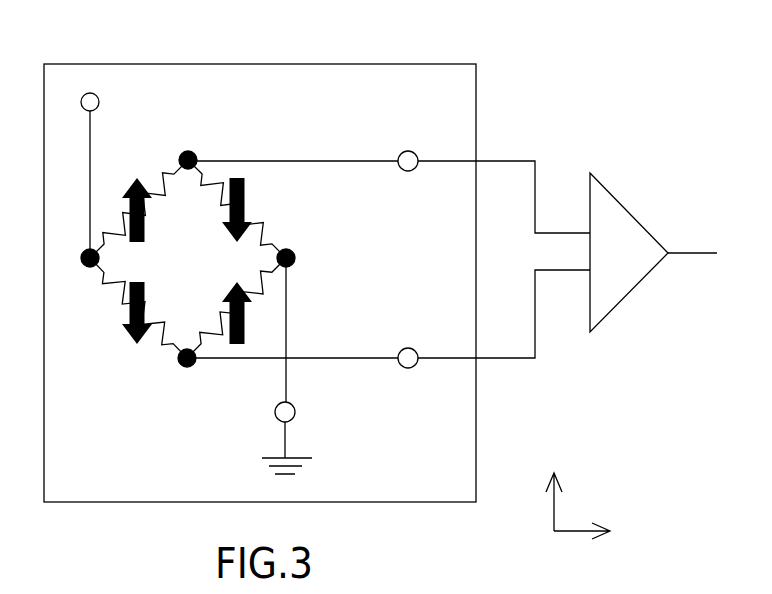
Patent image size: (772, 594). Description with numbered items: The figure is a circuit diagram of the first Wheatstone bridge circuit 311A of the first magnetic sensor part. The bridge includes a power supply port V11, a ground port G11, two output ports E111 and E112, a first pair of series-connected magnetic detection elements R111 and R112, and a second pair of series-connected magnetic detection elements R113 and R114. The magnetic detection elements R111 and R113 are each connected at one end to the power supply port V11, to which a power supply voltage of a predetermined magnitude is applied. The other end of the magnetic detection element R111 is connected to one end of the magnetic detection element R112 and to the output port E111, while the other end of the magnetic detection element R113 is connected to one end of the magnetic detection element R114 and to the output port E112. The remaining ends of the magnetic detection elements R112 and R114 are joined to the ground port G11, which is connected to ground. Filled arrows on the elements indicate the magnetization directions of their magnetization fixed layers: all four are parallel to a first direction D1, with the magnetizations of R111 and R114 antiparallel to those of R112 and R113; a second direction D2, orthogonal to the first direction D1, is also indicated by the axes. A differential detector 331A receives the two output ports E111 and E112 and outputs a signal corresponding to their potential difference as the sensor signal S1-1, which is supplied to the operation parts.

The 1-1st Wheatstone bridge circuit 311A is at (245, 64).
The power supply port V11 is at (109, 96).
The magnetic detection element R111 is at (139, 205).
The magnetic detection element R112 is at (245, 209).
The magnetic detection element R113 is at (127, 308).
The magnetic detection element R114 is at (228, 308).
The output port E111 is at (426, 149).
The output port E112 is at (426, 347).
The ground port G11 is at (298, 438).
The differential detector 331A is at (616, 200).
The 1-1st sensor signal S1-1 is at (692, 243).
The first direction D1 is at (543, 494).
The second direction D2 is at (594, 541).